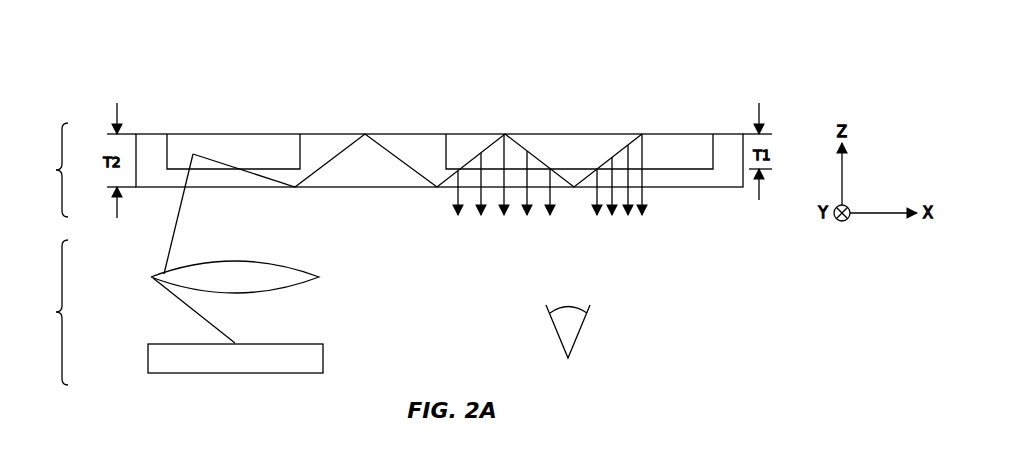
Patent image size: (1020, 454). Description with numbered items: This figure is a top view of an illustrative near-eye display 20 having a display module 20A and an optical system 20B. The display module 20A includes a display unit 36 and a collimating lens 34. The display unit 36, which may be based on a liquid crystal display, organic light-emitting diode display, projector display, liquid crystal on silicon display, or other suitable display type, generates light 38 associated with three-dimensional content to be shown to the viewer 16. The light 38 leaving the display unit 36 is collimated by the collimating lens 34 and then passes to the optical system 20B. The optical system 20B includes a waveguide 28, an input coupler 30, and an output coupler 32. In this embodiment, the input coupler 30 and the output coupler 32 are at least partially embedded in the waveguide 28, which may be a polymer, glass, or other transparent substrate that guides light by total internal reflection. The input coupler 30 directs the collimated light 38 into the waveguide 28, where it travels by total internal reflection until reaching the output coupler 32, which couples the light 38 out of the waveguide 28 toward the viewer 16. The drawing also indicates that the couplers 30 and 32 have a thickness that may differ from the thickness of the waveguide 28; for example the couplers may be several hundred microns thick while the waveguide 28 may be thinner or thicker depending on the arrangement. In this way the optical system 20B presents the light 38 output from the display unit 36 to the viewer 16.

The viewer 16 is at (578, 333).
The near-eye display 20 is at (662, 65).
The display module 20A is at (196, 307).
The optical system 20B is at (380, 161).
The waveguide 28 is at (669, 178).
The input coupler 30 is at (272, 142).
The output coupler 32 is at (680, 143).
The collimating lens 34 is at (297, 267).
The display unit 36 is at (325, 353).
The light 38 is at (390, 150).